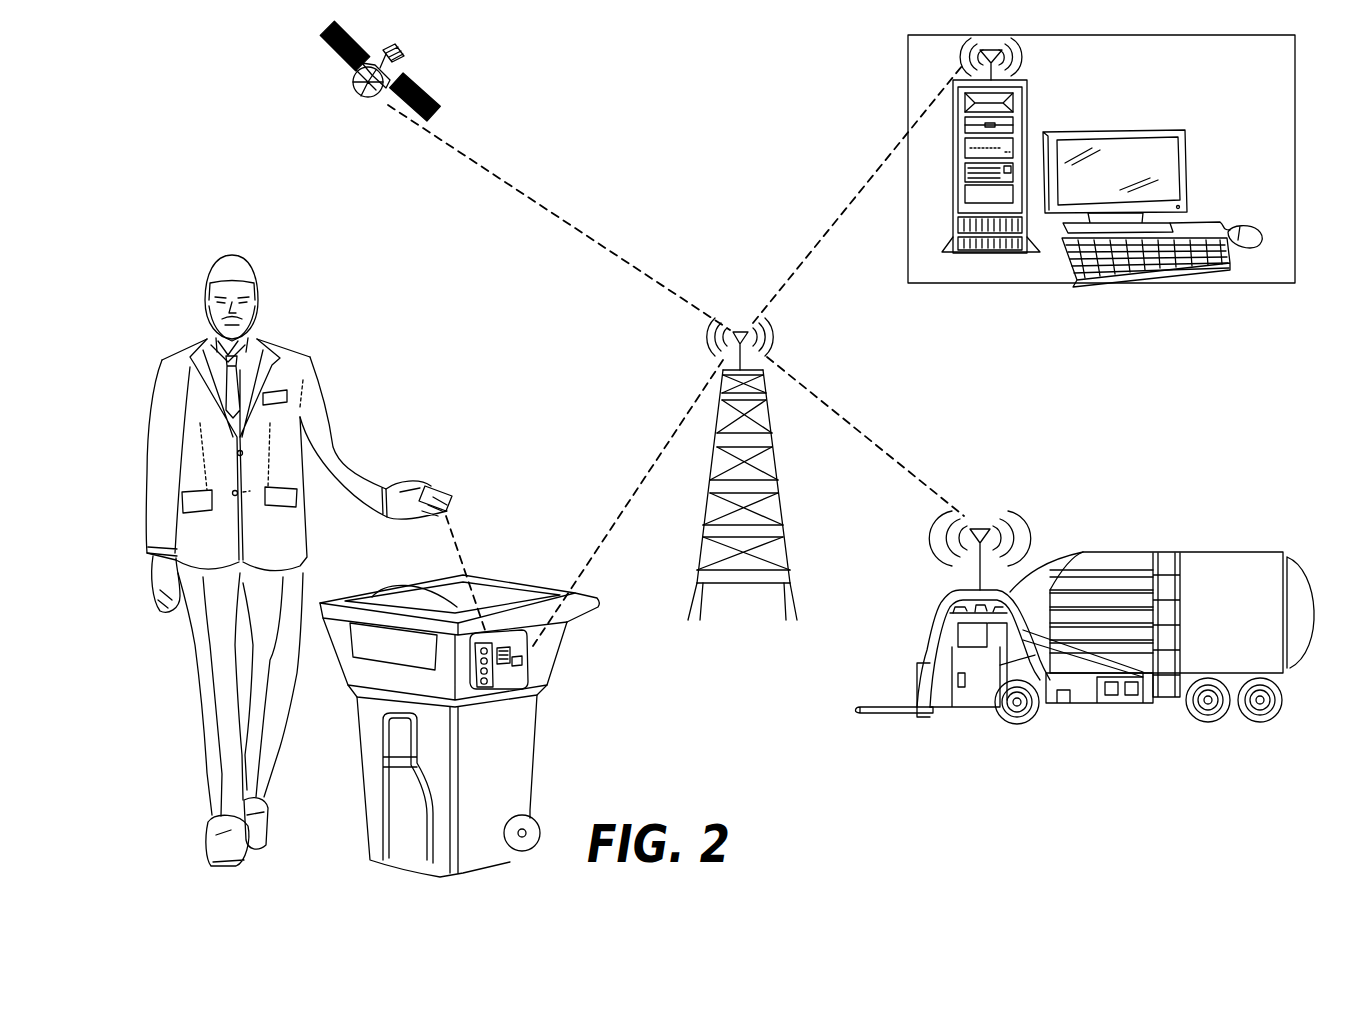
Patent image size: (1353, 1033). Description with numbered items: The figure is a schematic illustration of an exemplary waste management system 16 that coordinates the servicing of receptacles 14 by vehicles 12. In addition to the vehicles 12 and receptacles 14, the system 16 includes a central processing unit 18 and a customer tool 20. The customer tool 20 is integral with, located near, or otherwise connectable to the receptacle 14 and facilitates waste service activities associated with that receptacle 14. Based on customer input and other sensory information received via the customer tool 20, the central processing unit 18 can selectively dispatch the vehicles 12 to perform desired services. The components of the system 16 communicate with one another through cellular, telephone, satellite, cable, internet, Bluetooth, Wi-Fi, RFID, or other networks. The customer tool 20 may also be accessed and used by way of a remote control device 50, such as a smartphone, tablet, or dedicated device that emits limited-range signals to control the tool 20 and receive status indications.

The vehicle 12 is at (1239, 636).
The receptacle 14 is at (459, 726).
The waste management system 16 is at (723, 174).
The central processing unit 18 is at (908, 215).
The customer tool 20 is at (517, 697).
The remote control device 50 is at (453, 487).